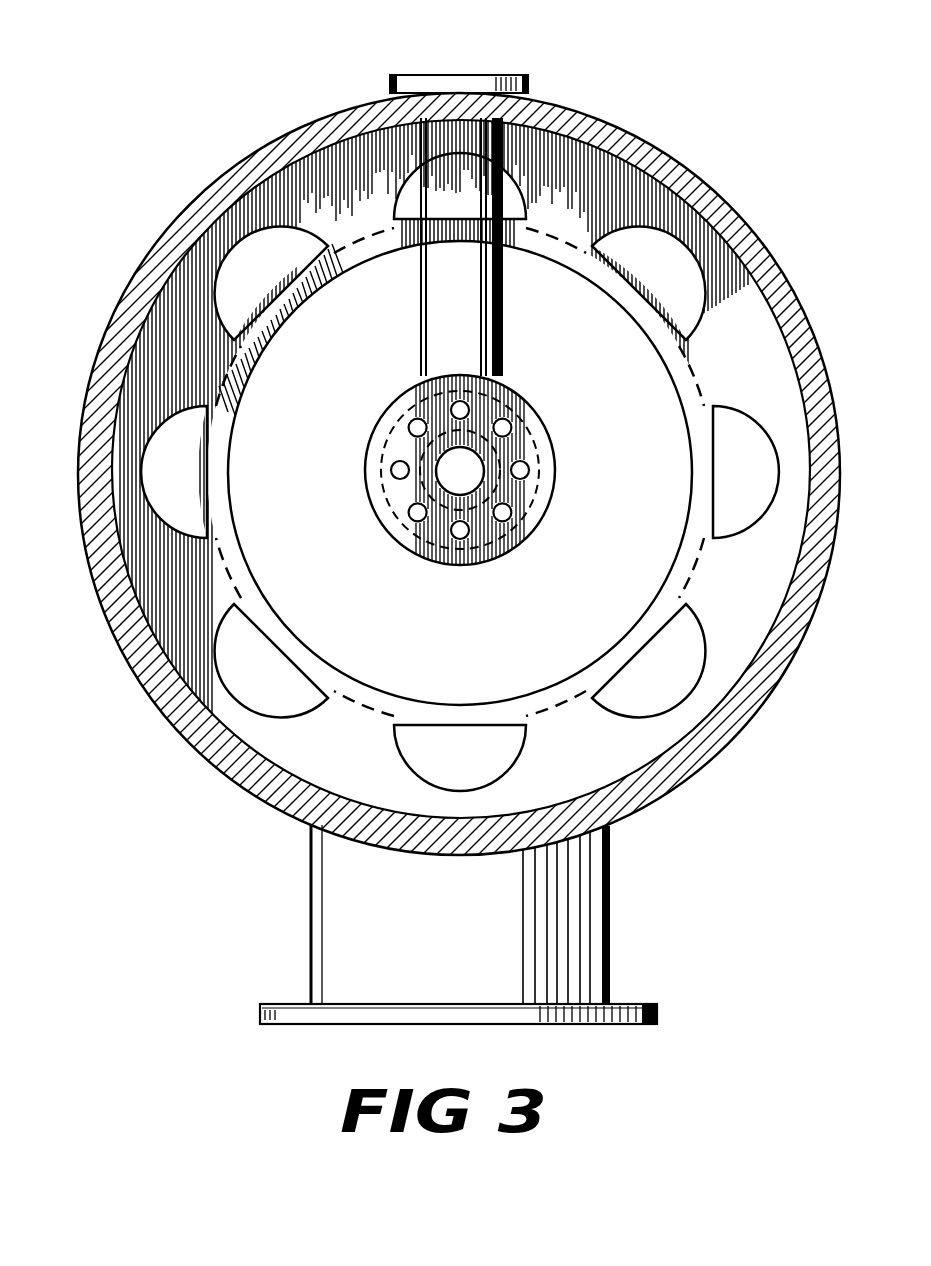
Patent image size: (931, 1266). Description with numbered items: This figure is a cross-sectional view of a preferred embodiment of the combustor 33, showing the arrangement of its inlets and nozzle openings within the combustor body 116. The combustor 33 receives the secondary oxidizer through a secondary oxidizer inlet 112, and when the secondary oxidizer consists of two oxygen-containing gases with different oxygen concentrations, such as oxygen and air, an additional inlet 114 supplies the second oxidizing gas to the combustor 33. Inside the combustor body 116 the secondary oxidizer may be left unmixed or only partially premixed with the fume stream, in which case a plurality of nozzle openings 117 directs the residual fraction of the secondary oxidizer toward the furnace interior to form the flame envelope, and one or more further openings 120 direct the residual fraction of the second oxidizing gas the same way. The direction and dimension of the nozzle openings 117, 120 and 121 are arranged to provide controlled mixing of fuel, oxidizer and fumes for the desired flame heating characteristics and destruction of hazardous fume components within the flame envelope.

The combustor 33 is at (613, 82).
The secondary oxidizer inlet 112 is at (535, 1024).
The additional inlet 114 is at (455, 77).
The combustor body 116 is at (720, 198).
The nozzle openings 117 is at (231, 260).
The openings 120 is at (504, 424).
The nozzle openings 121 is at (384, 674).